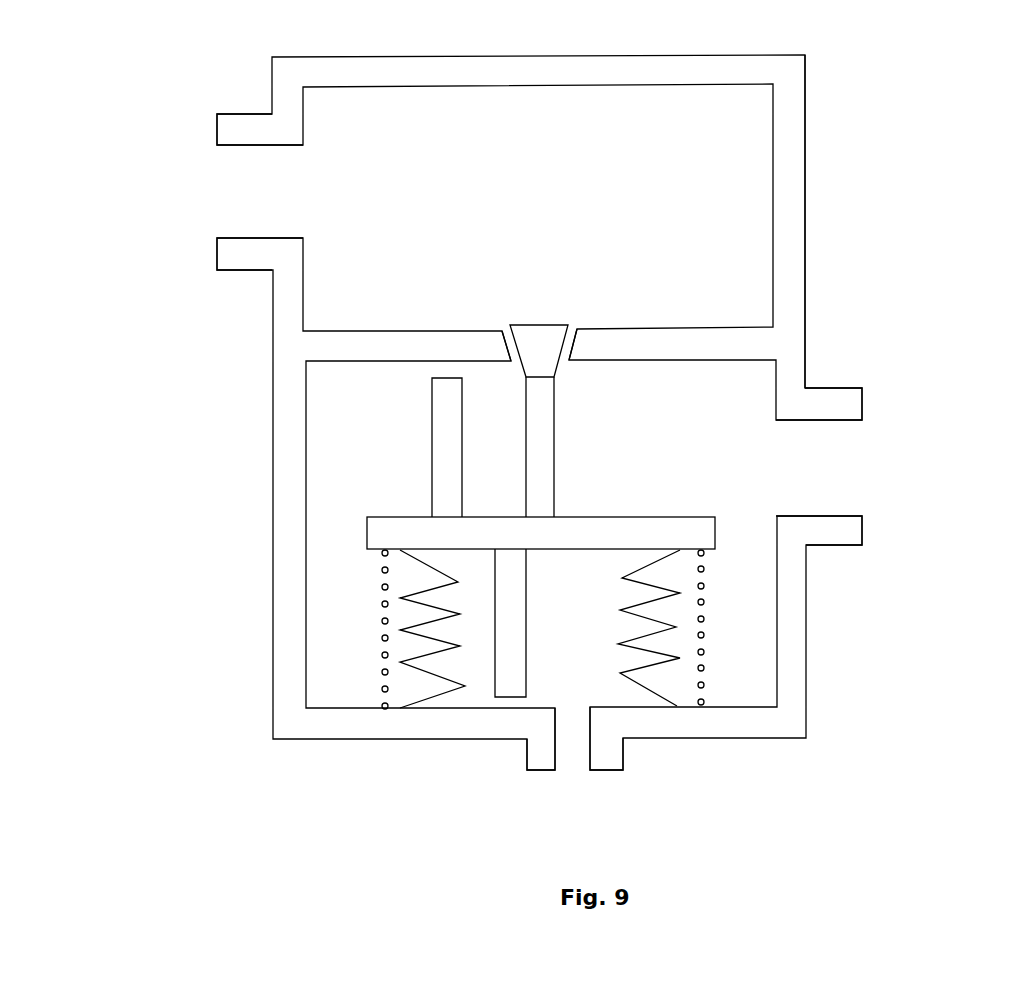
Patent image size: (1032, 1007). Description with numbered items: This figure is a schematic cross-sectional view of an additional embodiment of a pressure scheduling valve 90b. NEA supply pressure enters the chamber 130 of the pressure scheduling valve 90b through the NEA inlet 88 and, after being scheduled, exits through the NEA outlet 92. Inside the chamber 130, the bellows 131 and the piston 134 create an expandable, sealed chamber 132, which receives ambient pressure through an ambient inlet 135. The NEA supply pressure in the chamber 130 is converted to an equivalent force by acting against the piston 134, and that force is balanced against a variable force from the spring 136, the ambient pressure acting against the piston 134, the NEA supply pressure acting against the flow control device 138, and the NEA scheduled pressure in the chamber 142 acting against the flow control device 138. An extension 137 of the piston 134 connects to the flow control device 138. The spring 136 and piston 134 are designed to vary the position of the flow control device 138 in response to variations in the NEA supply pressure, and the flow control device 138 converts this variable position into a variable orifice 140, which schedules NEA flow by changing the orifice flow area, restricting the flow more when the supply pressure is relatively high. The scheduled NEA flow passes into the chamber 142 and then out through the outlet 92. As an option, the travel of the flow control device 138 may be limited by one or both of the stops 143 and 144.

The NEA inlet 88 is at (856, 453).
The pressure scheduling valve 90b is at (814, 142).
The NEA outlet 92 is at (201, 155).
The chamber 130 is at (627, 475).
The bellows 131 is at (410, 624).
The chamber 132 is at (600, 682).
The piston 134 is at (618, 530).
The ambient inlet 135 is at (564, 775).
The spring 136 is at (714, 596).
The extension 137 is at (545, 436).
The flow control device 138 is at (556, 330).
The variable orifice 140 is at (502, 322).
The chamber 142 is at (554, 176).
The stop 143 is at (451, 418).
The stop 144 is at (509, 604).